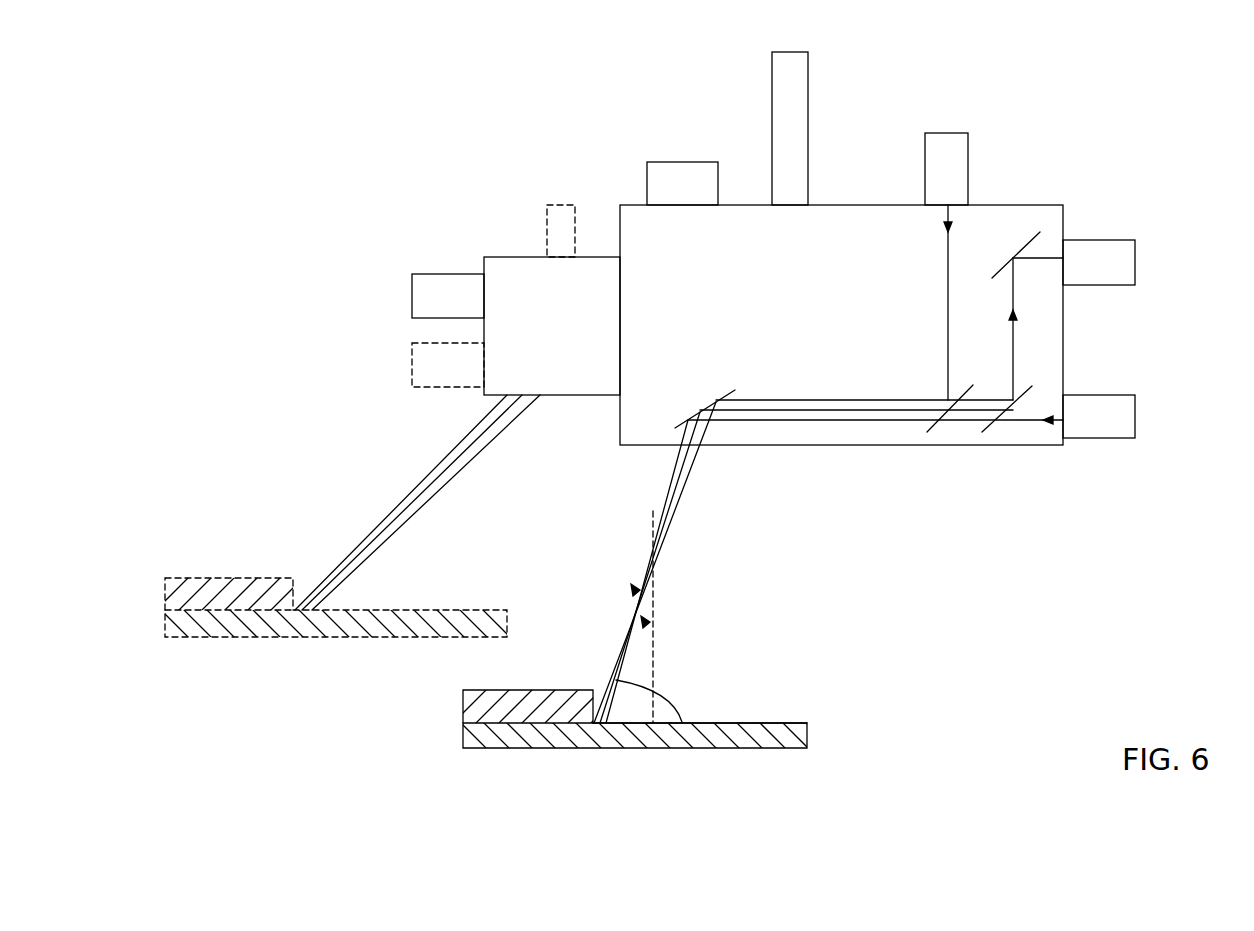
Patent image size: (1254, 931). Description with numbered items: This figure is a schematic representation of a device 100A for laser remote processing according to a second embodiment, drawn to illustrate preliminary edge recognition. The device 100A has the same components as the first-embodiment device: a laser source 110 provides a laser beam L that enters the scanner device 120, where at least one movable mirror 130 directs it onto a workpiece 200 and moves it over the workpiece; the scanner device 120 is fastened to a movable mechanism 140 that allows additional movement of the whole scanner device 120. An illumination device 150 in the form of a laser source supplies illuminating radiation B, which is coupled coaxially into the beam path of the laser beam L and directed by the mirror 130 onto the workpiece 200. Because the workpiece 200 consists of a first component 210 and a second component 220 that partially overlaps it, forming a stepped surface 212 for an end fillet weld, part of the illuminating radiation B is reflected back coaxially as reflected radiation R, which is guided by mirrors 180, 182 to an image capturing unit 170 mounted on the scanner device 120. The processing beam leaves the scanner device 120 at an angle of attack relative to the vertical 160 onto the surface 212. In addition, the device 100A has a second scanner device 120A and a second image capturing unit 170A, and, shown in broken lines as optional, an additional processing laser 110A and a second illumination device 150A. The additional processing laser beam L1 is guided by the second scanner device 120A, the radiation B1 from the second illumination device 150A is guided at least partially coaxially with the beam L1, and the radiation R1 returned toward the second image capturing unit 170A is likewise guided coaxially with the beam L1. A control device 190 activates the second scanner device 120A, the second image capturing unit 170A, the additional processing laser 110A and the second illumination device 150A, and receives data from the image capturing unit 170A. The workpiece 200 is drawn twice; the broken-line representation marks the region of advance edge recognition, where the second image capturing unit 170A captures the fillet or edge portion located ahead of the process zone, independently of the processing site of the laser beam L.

The device 100A is at (600, 72).
The laser source 110 is at (942, 157).
The additional processing laser 110A is at (555, 203).
The scanner device 120 is at (620, 445).
The second scanner device 120A is at (498, 257).
The movable mirror 130 is at (700, 417).
The movable mechanism 140 is at (782, 118).
The illumination device 150 is at (1105, 420).
The second illumination device 150A is at (413, 367).
The vertical 160 is at (653, 607).
The image capturing unit 170 is at (1105, 258).
The second image capturing unit 170A is at (428, 274).
The mirror 180 is at (1022, 253).
The mirror 182 is at (987, 443).
The control device 190 is at (660, 185).
The workpiece 200 is at (564, 635).
The first component 210 is at (470, 627).
The surface 212 is at (743, 723).
The second component 220 is at (195, 587).
The laser beam L is at (946, 248).
The reflected radiation R is at (1013, 348).
The illuminating radiation B is at (1020, 420).
The additional processing laser beam L1 is at (450, 457).
The radiation from the second illumination device B1 is at (412, 490).
The radiation guided towards the second image capturing unit R1 is at (393, 523).